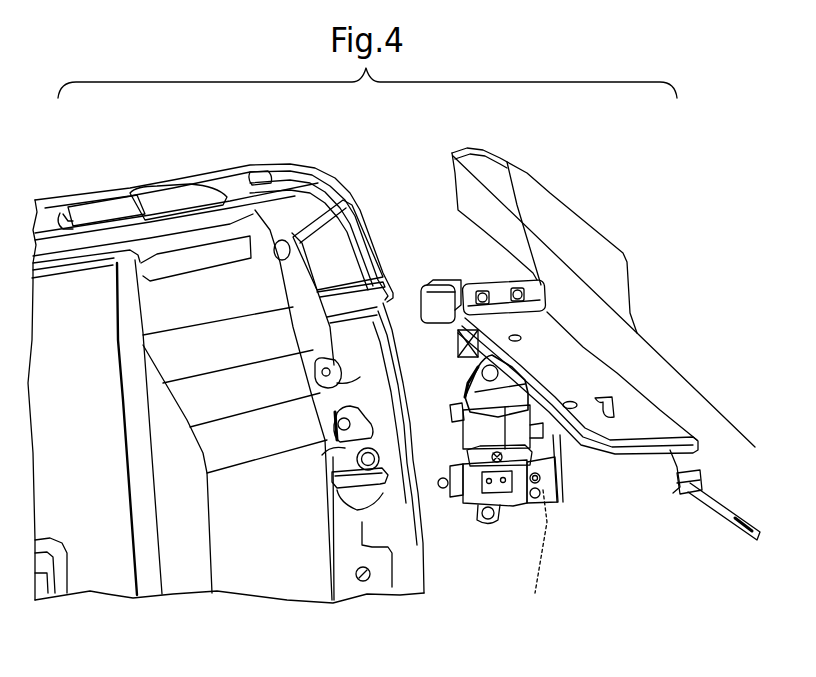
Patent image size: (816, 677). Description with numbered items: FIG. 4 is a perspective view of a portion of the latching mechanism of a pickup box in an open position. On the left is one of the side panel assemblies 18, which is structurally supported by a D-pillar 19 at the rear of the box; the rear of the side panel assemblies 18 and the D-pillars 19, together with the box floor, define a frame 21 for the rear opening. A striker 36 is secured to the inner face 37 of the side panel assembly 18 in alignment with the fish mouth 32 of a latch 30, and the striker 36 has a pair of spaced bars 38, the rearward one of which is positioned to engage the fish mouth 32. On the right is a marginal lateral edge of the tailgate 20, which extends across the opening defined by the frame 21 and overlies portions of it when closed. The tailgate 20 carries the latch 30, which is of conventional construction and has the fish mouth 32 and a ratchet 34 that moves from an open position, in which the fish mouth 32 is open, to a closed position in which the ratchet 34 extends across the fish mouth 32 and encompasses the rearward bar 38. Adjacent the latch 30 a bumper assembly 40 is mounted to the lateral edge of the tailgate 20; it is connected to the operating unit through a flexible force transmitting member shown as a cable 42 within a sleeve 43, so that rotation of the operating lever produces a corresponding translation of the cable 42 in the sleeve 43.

The side panel assembly 18 is at (47, 278).
The D-pillar 19 is at (261, 572).
The tailgate 20 is at (527, 205).
The frame 21 is at (409, 549).
The latch 30 is at (562, 503).
The fish mouth 32 is at (513, 497).
The ratchet 34 is at (468, 460).
The striker 36 is at (373, 483).
The inner face 37 is at (360, 387).
The spaced bar 38 is at (348, 447).
The bumper assembly 40 is at (590, 356).
The cable 42 is at (660, 462).
The sleeve 43 is at (736, 513).